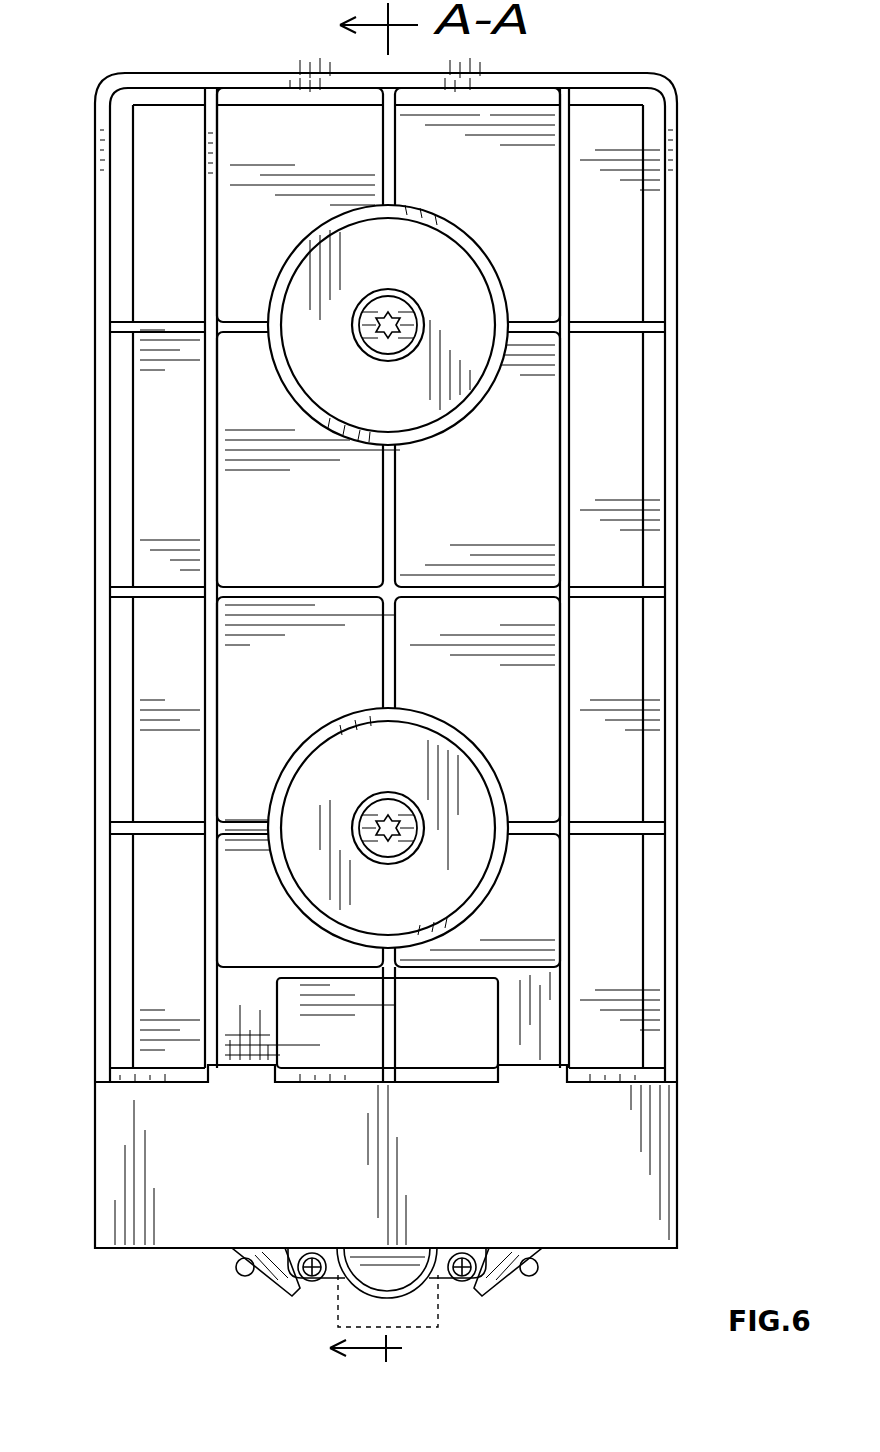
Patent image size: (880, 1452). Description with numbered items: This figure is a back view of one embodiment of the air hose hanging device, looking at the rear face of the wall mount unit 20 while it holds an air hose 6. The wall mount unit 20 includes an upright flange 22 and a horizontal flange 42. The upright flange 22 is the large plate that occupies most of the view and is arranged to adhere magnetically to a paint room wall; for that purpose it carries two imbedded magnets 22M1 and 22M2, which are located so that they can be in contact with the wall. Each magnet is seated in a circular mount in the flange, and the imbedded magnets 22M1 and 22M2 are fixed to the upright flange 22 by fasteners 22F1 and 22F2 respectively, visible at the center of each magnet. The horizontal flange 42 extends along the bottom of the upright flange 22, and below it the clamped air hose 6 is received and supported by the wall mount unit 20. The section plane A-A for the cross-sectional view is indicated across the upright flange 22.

The wall mount unit 20 is at (703, 495).
The upright flange 22 is at (678, 350).
The imbedded magnet 22M1 is at (433, 277).
The imbedded magnet 22M2 is at (403, 784).
The fastener 22F1 is at (414, 334).
The fastener 22F2 is at (410, 858).
The horizontal flange 42 is at (677, 1168).
The air hose 6 is at (462, 1325).